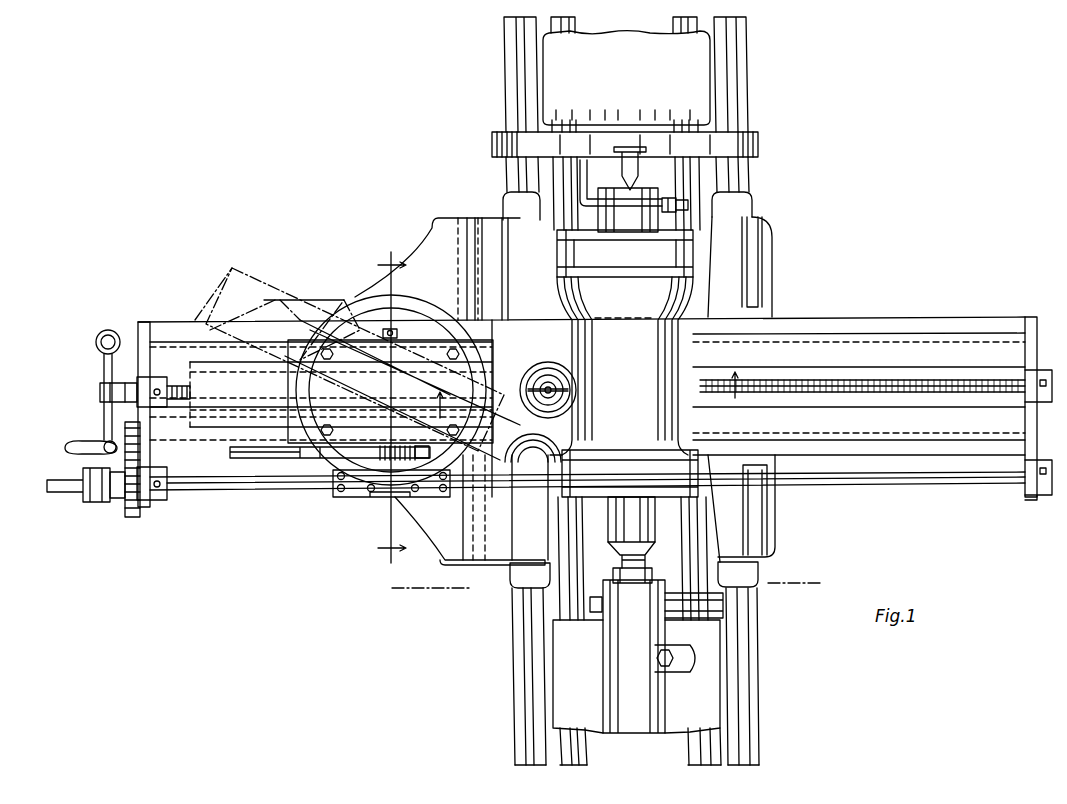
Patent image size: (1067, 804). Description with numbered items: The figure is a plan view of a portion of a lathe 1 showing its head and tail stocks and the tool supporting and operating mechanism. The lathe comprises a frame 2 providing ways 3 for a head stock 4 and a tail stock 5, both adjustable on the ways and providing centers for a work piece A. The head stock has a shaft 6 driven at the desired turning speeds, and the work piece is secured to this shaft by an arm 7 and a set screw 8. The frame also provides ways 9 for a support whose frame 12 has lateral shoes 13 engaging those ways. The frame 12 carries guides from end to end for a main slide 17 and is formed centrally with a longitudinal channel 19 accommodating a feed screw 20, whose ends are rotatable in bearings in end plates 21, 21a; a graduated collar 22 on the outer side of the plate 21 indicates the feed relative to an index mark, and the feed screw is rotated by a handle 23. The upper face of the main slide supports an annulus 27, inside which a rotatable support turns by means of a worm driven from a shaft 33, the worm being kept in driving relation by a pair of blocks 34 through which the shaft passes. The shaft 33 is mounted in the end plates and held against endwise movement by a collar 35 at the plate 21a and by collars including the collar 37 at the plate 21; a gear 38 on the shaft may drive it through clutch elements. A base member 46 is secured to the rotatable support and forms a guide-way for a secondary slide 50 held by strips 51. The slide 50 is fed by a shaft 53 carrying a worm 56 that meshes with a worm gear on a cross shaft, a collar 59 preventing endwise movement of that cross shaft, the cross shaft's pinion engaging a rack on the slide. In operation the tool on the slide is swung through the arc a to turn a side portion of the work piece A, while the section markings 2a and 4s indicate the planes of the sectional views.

The lathe 1 is at (746, 90).
The frame 2 is at (746, 180).
The ways 3 is at (630, 740).
The head stock 4 is at (626, 78).
The tail stock 5 is at (638, 627).
The shaft 6 is at (617, 124).
The arm 7 is at (582, 176).
The set screw 8 is at (669, 196).
The ways 9 is at (514, 675).
The frame 12 is at (900, 314).
The shoes 13 is at (503, 203).
The main slide 17 is at (408, 310).
The longitudinal channel 19 is at (955, 404).
The feed screw 20 is at (898, 400).
The end plate 21 is at (143, 322).
The end plate 21a is at (1025, 317).
The collar 22 is at (122, 378).
The handle 23 is at (100, 364).
The annulus 27 is at (375, 312).
The shaft 33 is at (870, 487).
The blocks 34 is at (440, 498).
The collar 35 is at (1040, 495).
The collar 37 is at (162, 502).
The gear 38 is at (122, 506).
The base member 46 is at (440, 320).
The secondary slide 50 is at (193, 424).
The strips 51 is at (494, 355).
The shaft 53 is at (352, 455).
The worm 56 is at (392, 457).
The collar 59 is at (390, 328).
The work piece A is at (690, 427).
The arc a is at (585, 432).
The section arrow 2a is at (587, 395).
The section line 4-4 4s is at (389, 408).